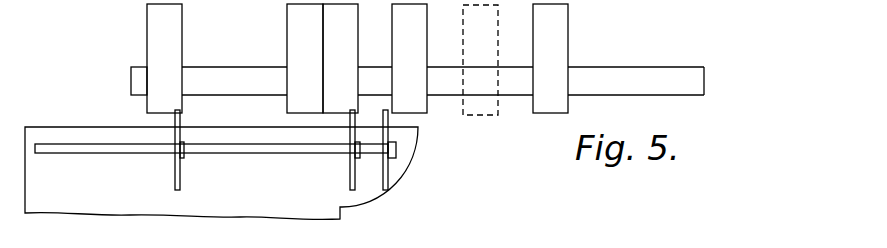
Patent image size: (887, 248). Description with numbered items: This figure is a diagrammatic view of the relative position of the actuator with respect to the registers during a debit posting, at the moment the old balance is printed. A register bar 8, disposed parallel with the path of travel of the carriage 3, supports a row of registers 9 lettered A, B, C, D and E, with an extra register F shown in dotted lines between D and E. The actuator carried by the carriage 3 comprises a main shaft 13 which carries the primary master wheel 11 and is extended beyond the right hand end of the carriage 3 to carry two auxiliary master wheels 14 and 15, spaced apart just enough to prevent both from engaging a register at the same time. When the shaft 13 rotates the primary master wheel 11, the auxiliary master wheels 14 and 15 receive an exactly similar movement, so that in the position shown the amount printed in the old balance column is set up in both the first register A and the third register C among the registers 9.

The carriage 3 is at (100, 204).
The register bar 8 is at (625, 77).
The registers 9 is at (151, 43).
The master wheel 11 is at (182, 176).
The main shaft 13 is at (247, 155).
The auxiliary master wheel 14 is at (348, 181).
The auxiliary master wheel 15 is at (390, 178).